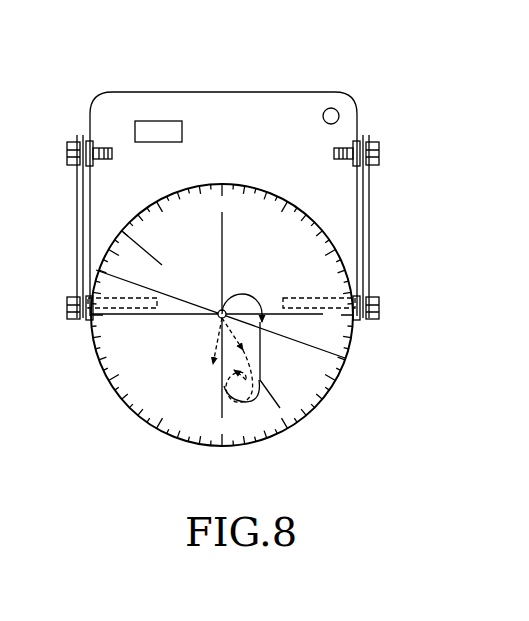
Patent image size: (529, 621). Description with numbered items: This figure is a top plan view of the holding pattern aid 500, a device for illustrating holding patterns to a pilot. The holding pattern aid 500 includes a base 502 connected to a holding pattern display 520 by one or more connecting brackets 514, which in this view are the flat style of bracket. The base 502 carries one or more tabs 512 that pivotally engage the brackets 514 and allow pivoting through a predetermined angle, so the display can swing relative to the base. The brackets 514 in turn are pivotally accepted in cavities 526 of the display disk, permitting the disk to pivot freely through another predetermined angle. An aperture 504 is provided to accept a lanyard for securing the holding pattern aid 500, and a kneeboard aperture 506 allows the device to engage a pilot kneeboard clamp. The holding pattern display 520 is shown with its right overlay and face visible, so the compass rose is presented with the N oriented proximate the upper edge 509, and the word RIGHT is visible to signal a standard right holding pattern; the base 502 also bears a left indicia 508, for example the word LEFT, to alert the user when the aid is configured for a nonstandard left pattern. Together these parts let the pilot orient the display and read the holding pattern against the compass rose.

The holding pattern aid 500 is at (88, 64).
The base 502 is at (267, 452).
The aperture 504 is at (326, 108).
The kneeboard aperture 506 is at (146, 121).
The left indicia 508 is at (178, 432).
The upper edge 509 is at (203, 92).
The tab 512 is at (80, 138).
The connecting bracket 514 is at (77, 249).
The holding pattern display 520 is at (285, 187).
The cavity 526 is at (130, 312).